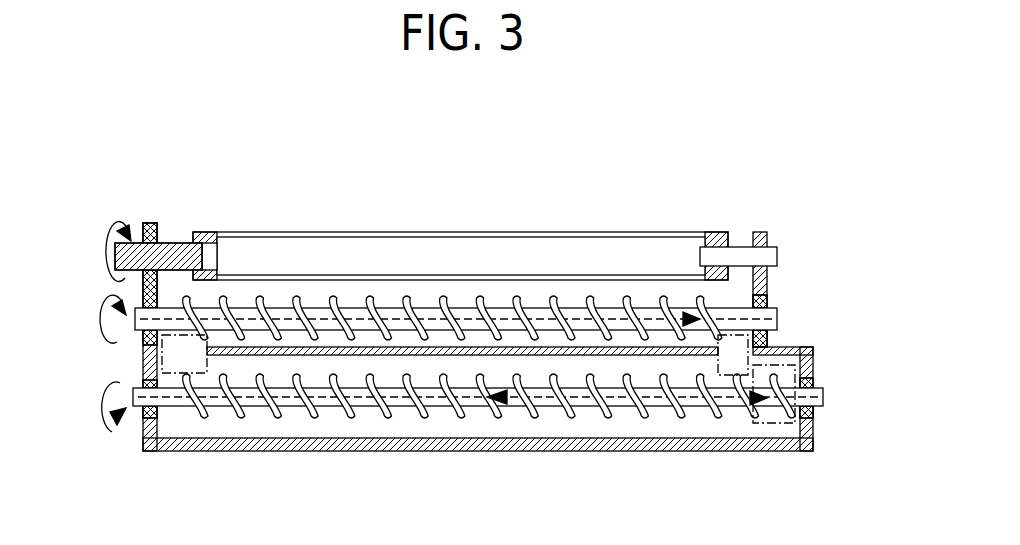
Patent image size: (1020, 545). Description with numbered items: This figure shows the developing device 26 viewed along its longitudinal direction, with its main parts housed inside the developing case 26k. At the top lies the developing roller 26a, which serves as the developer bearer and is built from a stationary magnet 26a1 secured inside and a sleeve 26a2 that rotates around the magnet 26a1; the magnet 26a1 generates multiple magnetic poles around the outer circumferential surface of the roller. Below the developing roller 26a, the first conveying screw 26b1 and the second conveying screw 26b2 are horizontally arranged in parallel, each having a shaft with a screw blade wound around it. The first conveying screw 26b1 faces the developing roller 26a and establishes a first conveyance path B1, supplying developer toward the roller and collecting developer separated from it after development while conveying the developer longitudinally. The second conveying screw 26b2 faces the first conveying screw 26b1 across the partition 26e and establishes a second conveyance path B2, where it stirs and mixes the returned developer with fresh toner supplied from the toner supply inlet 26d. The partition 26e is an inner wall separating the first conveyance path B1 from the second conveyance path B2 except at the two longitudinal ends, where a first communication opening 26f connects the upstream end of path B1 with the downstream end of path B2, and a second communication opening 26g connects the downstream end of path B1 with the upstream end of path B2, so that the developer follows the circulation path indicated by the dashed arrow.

The developing device 26 is at (283, 456).
The developing roller 26a is at (446, 192).
The magnet 26a1 is at (620, 153).
The sleeve 26a2 is at (588, 232).
The first conveying screw 26b1 is at (318, 298).
The second conveying screw 26b2 is at (350, 412).
The toner supply inlet 26d is at (770, 422).
The partition 26e is at (448, 356).
The first communication opening 26f is at (181, 338).
The second communication opening 26g is at (716, 364).
The developing case 26k is at (617, 440).
The first conveyance path B1 is at (410, 292).
The second conveyance path B2 is at (518, 432).